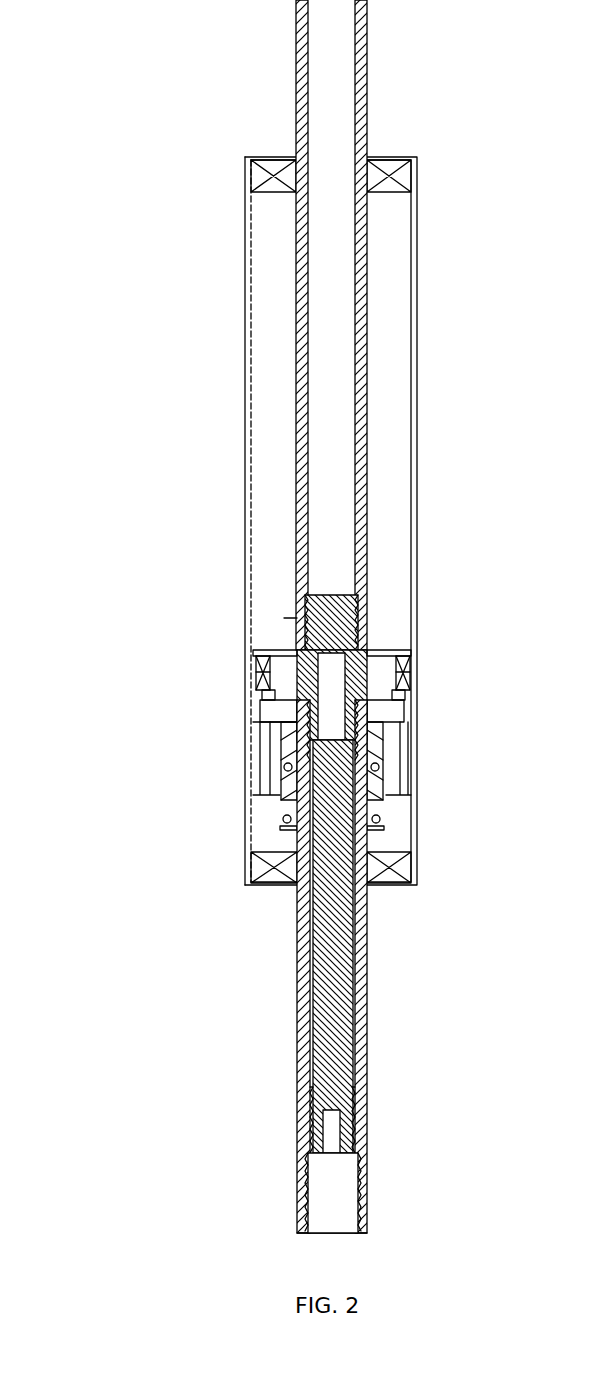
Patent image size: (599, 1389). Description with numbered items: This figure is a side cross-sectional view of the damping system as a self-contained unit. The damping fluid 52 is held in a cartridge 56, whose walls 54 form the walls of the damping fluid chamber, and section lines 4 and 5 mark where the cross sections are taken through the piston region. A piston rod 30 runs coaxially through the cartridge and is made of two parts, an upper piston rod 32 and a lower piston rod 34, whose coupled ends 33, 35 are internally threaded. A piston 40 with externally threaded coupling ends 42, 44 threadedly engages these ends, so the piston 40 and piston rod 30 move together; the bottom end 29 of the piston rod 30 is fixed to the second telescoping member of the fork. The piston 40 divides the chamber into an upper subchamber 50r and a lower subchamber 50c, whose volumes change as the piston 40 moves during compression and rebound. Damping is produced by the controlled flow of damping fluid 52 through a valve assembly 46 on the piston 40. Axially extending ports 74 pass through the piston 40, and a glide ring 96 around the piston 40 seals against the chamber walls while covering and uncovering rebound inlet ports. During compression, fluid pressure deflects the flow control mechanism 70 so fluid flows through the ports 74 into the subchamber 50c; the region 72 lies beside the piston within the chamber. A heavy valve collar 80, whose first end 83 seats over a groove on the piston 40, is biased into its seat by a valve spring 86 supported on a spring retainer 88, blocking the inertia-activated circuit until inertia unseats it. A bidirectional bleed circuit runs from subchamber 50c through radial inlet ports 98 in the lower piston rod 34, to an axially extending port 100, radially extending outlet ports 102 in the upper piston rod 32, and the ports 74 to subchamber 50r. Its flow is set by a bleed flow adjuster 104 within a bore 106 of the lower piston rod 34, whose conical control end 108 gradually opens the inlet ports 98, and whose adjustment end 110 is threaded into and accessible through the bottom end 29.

The bottom end 29 is at (368, 1195).
The piston rod 30 is at (262, 436).
The upper piston rod 32 is at (294, 287).
The coupled end 33 is at (284, 618).
The lower piston rod 34 is at (300, 905).
The coupled end 35 is at (297, 712).
The piston 40 is at (297, 648).
The coupling end 42 is at (360, 597).
The coupling end 44 is at (386, 755).
The valve assembly 46 is at (106, 627).
The subchamber 50r is at (273, 237).
The subchamber 50c is at (262, 833).
The damping fluid 52 is at (405, 272).
The walls 54 is at (249, 360).
The cartridge 56 is at (247, 316).
The flow control mechanism 70 is at (404, 712).
The annular chamber 72 is at (432, 737).
The ports 74 is at (398, 653).
The valve collar 80 is at (262, 790).
The first end 83 is at (405, 692).
The valve spring 86 is at (384, 798).
The spring retainer 88 is at (380, 829).
The glide ring 96 is at (258, 668).
The radial inlet ports 98 is at (280, 752).
The axially extending port 100 is at (347, 645).
The radially extending outlet ports 102 is at (342, 660).
The bleed flow adjuster 104 is at (318, 977).
The bore 106 is at (316, 1020).
The control end 108 is at (297, 726).
The adjustment end 110 is at (336, 1153).
The section line 4- 4 is at (537, 690).
The section line 5- 5 is at (537, 802).